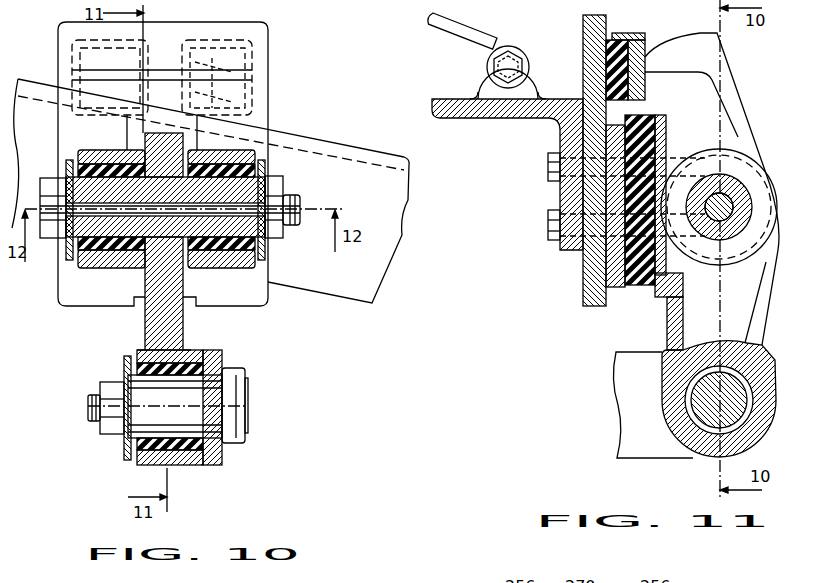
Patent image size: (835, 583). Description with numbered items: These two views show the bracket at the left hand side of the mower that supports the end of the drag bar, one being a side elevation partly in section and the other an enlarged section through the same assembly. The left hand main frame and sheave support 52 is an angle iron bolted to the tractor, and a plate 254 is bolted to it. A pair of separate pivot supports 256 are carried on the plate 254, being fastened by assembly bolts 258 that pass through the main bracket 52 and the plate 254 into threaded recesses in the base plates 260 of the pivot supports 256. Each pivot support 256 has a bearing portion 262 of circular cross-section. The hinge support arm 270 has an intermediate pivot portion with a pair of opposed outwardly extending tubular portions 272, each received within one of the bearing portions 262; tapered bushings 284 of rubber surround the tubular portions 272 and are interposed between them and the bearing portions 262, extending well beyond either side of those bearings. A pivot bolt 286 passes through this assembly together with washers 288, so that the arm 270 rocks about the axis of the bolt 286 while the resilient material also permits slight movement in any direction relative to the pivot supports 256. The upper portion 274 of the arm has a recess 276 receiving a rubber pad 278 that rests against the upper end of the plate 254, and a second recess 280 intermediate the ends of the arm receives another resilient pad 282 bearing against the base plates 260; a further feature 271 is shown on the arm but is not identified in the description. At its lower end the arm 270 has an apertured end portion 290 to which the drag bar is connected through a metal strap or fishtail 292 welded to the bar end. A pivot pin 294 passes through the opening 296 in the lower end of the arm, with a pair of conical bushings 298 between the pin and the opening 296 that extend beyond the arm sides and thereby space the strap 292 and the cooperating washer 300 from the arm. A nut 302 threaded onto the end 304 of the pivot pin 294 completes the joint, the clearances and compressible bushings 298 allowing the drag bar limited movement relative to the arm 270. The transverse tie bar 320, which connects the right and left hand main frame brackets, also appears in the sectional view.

In FIG. 10, the left hand main frame and sheave support 52 is at (380, 160).
In FIG. 11, the left hand main frame and sheave support 52 is at (503, 117).
In FIG. 10, the plate 254 is at (264, 80).
In FIG. 11, the plate 254 is at (590, 267).
In FIG. 10, the pivot supports 256 is at (238, 270).
In FIG. 11, the pivot supports 256 is at (607, 247).
In FIG. 11, the assembly bolts 258 is at (548, 178).
In FIG. 11, the base plates 260 is at (613, 267).
In FIG. 10, the bearing portion 262 is at (95, 268).
In FIG. 10, the hinge support arm 270 is at (150, 336).
In FIG. 11, the hinge support arm 270 is at (673, 324).
In FIG. 10, the arm inner contour 271 is at (250, 46).
In FIG. 11, the arm inner contour 271 is at (648, 63).
In FIG. 10, the tubular portions 272 is at (250, 183).
In FIG. 11, the upper portion 274 is at (704, 36).
In FIG. 11, the recess 276 is at (647, 48).
In FIG. 10, the pad 278 is at (76, 56).
In FIG. 11, the pad 278 is at (615, 43).
In FIG. 11, the second recess 280 is at (668, 273).
In FIG. 11, the pad 282 is at (663, 125).
In FIG. 10, the tapered bushings 284 is at (268, 264).
In FIG. 10, the pivot bolt 286 is at (64, 226).
In FIG. 11, the pivot bolt 286 is at (698, 232).
In FIG. 10, the washers 288 is at (68, 166).
In FIG. 10, the apertured end portion 290 is at (186, 465).
In FIG. 10, the strap 292 is at (225, 456).
In FIG. 11, the strap 292 is at (672, 449).
In FIG. 10, the pivot pin 294 is at (218, 416).
In FIG. 11, the pivot pin 294 is at (695, 410).
In FIG. 10, the opening 296 is at (147, 465).
In FIG. 10, the tapered bushings 298 is at (178, 362).
In FIG. 10, the washer 300 is at (127, 440).
In FIG. 10, the nut 302 is at (105, 388).
In FIG. 10, the end 304 is at (92, 410).
In FIG. 11, the tie bar 320 is at (463, 33).